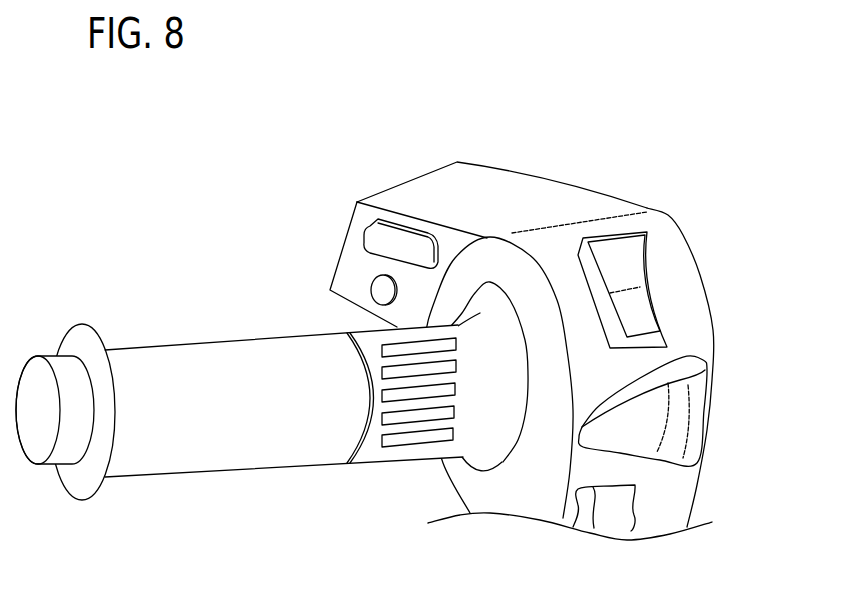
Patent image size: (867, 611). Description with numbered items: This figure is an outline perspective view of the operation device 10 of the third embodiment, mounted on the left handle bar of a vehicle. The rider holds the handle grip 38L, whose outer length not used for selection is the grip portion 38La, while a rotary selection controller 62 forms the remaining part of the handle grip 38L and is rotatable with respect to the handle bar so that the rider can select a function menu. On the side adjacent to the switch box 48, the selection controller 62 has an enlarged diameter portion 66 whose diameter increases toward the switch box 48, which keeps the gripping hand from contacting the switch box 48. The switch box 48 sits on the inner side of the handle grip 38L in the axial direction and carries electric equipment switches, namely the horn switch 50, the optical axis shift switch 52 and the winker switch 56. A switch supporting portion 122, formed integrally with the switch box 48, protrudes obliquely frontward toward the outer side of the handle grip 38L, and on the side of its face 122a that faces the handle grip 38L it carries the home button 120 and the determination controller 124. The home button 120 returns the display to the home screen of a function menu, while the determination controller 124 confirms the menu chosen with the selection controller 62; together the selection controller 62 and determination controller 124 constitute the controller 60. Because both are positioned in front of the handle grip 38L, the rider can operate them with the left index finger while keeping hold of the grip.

The operation device 10 is at (273, 225).
The handle grip 38L is at (143, 487).
The grip portion 38La is at (133, 360).
The switch box 48 is at (683, 278).
The horn switch 50 is at (698, 427).
The optical axis shift switch 52 is at (628, 247).
The winker switch 56 is at (618, 527).
The controller 60 is at (528, 100).
The selection controller 62 is at (433, 347).
The enlarged diameter portion 66 is at (503, 452).
The home button 120 is at (383, 290).
The switch supporting portion 122 is at (523, 182).
The face 122a is at (343, 232).
The determination controller 124 is at (402, 240).